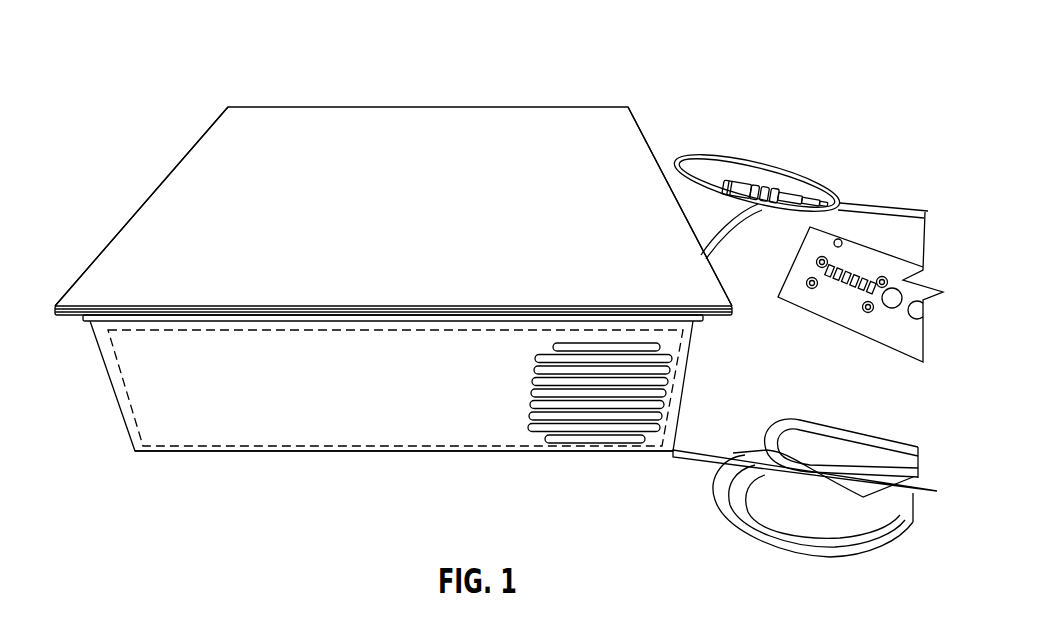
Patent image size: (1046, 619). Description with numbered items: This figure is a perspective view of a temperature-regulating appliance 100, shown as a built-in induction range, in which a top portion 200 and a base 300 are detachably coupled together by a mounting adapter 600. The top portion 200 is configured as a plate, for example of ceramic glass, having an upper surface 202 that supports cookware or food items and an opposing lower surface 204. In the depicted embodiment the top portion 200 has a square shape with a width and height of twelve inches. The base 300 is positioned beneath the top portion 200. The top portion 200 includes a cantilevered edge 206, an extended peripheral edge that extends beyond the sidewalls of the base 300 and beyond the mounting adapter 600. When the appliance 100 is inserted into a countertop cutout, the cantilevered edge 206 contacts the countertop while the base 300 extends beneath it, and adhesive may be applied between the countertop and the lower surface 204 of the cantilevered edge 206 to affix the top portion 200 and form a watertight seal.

The temperature-regulating appliance 100 is at (168, 33).
The top portion 200 is at (387, 150).
The upper surface 202 is at (532, 130).
The lower surface 204 is at (718, 322).
The cantilevered edge 206 is at (142, 203).
The base 300 is at (212, 442).
The mounting adapter 600 is at (297, 453).